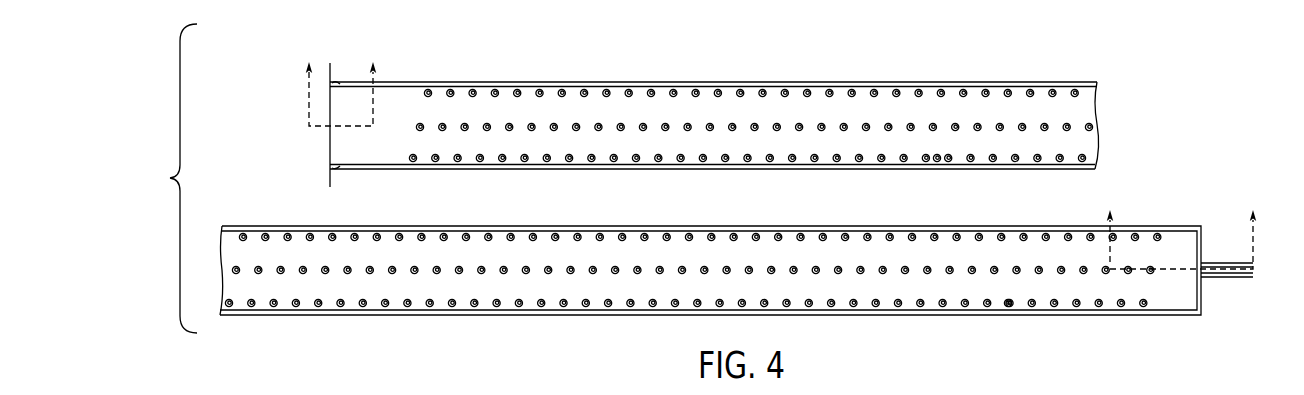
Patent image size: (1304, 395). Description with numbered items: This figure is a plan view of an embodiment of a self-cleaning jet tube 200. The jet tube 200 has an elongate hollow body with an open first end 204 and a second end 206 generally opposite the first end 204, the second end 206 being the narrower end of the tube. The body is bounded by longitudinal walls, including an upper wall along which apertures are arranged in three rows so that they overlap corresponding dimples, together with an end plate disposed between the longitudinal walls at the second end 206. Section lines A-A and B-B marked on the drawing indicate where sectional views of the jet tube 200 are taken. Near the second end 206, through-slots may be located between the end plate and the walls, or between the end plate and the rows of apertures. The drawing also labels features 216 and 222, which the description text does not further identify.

The self-cleaning jet tube 200 is at (1170, 183).
The first end 204 is at (315, 163).
The second end 206 is at (1210, 316).
The end plate 216 is at (330, 180).
The stub 222 is at (1222, 277).